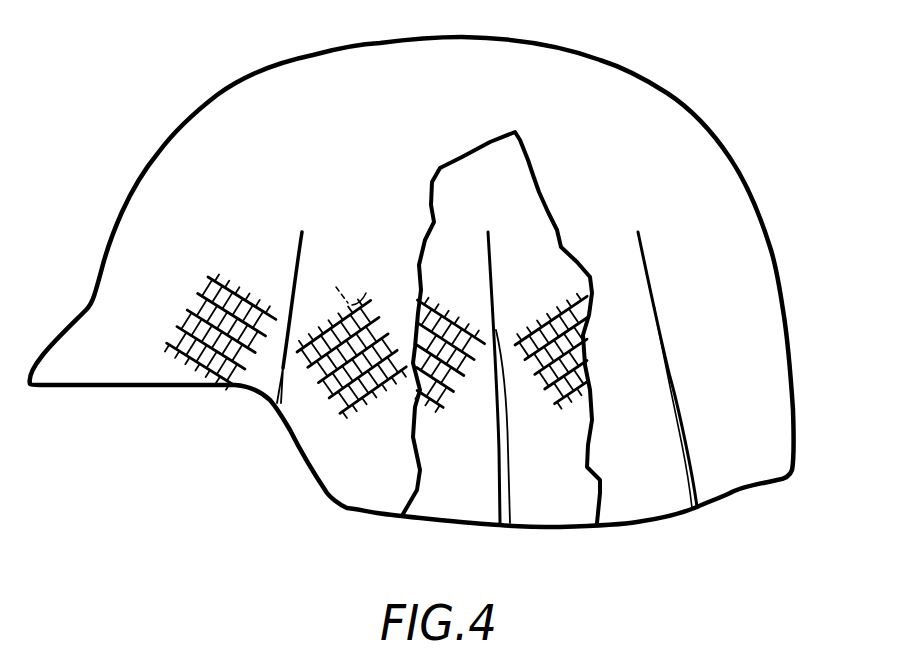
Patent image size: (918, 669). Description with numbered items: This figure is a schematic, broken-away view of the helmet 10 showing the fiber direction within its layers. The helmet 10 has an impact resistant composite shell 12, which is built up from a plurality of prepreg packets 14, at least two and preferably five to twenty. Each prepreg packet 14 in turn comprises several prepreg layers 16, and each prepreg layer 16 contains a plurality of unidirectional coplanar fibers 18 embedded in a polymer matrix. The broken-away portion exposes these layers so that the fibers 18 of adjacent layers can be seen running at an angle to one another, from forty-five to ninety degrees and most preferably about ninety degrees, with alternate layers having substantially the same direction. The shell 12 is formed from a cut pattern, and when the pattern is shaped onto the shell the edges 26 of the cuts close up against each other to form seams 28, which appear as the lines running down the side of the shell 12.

The helmet 10 is at (412, 287).
The composite shell 12 is at (412, 282).
The prepreg packet 14 is at (380, 495).
The prepreg layer 16 is at (467, 300).
The unidirectional coplanar fibers 18 is at (577, 302).
The edge of the cut 26 is at (668, 347).
The seam 28 is at (698, 508).